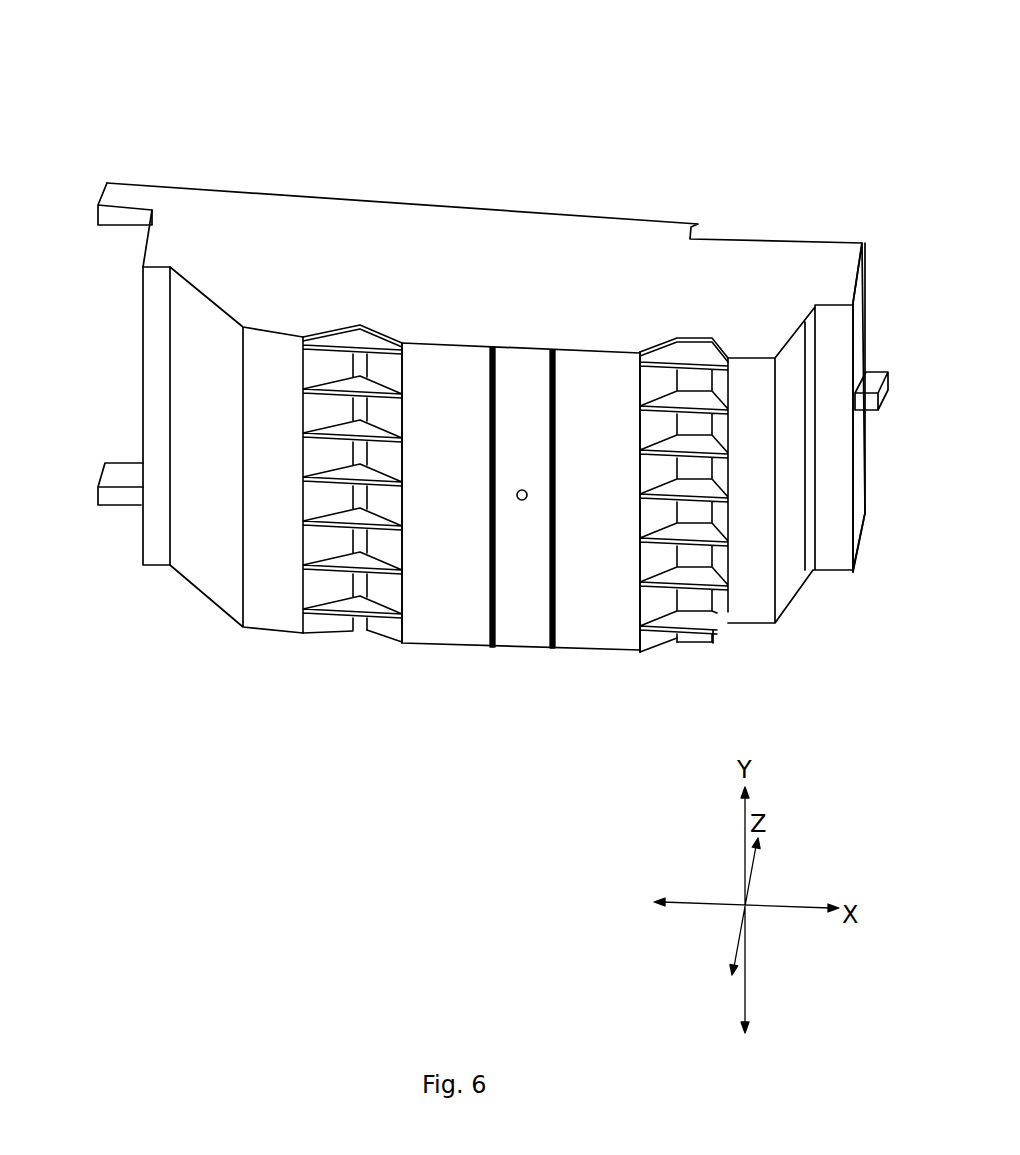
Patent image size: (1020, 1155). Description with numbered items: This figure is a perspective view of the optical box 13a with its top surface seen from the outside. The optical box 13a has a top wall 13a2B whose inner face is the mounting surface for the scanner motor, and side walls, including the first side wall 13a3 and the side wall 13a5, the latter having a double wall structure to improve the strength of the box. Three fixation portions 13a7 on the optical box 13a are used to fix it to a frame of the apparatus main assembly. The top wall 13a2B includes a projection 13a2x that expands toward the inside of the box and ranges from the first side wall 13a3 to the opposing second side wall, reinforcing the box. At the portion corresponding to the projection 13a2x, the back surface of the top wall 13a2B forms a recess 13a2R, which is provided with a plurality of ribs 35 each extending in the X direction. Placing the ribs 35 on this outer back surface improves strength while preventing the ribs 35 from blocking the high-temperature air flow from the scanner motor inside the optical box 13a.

The optical box 13a is at (487, 164).
The top wall 13a2B is at (445, 385).
The recess 13a2R is at (655, 472).
The projection 13a2x is at (383, 331).
The first side wall 13a3 is at (232, 184).
The side wall 13a5 is at (860, 306).
The fixation portion 13a7 is at (130, 183).
The rib 35 is at (355, 324).